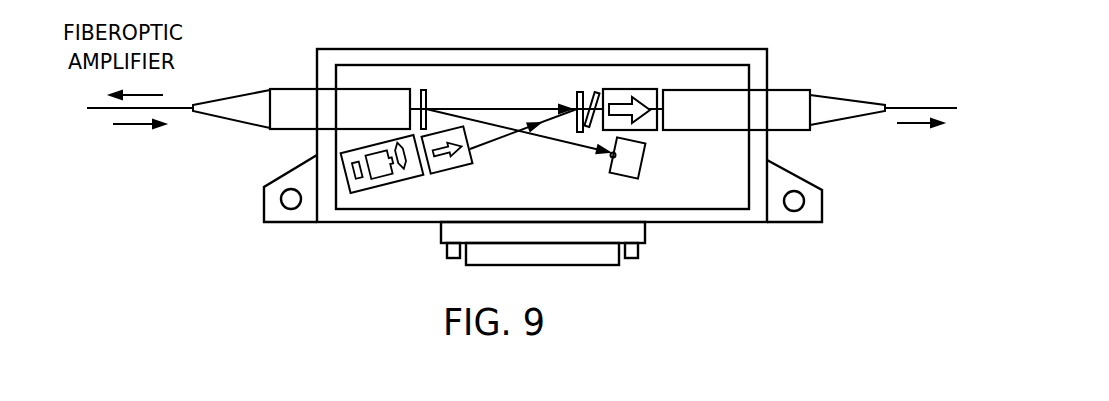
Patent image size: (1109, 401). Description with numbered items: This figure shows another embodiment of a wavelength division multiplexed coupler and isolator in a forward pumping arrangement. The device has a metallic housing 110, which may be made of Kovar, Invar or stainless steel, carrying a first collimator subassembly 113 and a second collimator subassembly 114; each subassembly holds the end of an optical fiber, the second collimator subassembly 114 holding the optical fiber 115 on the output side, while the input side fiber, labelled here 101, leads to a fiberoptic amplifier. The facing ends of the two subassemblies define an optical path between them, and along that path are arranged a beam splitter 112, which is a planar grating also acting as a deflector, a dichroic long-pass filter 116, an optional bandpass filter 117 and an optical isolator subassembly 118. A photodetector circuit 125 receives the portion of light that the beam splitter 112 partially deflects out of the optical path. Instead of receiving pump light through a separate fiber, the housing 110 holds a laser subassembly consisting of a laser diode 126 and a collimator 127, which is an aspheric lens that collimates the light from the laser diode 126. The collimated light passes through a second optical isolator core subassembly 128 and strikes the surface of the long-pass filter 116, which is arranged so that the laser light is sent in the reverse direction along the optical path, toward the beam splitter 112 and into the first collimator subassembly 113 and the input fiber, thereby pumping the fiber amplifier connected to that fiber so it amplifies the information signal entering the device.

The input optical fiber 101 is at (172, 107).
The housing 110 is at (328, 224).
The beam splitter 112 is at (425, 89).
The first collimator subassembly 113 is at (365, 100).
The second collimator subassembly 114 is at (790, 126).
The optical fiber 115 is at (917, 105).
The long-pass filter 116 is at (576, 101).
The bandpass filter 117 is at (597, 91).
The optical isolator subassembly 118 is at (650, 128).
The photodetector circuit 125 is at (622, 170).
The laser diode 126 is at (385, 177).
The collimator 127 is at (414, 173).
The second optical isolator core subassembly 128 is at (462, 160).